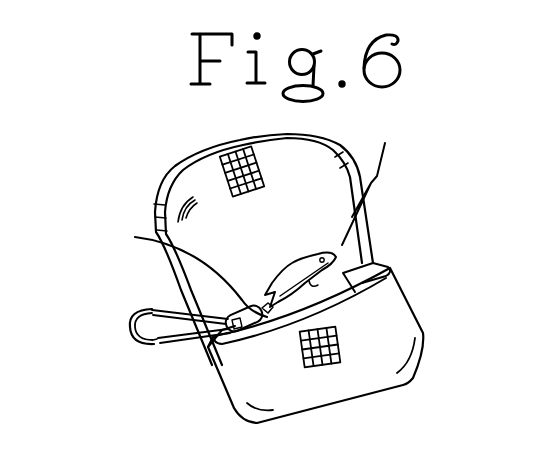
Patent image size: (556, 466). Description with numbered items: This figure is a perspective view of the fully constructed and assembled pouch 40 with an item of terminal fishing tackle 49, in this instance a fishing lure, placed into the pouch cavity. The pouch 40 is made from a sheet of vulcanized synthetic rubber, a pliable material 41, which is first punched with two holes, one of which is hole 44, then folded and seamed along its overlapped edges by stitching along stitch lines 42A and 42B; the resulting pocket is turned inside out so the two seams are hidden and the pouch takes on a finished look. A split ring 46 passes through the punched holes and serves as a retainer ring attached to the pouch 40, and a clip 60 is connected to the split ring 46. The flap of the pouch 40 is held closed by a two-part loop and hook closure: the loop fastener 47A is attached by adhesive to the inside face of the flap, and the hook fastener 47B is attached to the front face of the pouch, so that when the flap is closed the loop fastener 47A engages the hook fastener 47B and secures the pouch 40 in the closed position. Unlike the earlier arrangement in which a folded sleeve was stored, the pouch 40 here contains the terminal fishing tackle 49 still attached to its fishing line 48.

The pouch 40 is at (363, 403).
The pliable material 41 is at (317, 173).
The stitch line 42A is at (222, 325).
The stitch line 42B is at (390, 265).
The hole 44 is at (227, 313).
The split ring 46 is at (157, 235).
The loop fastener 47A is at (224, 143).
The hook fastener 47B is at (245, 375).
The fishing line 48 is at (372, 182).
The terminal fishing tackle 49 is at (328, 251).
The clip 60 is at (132, 323).